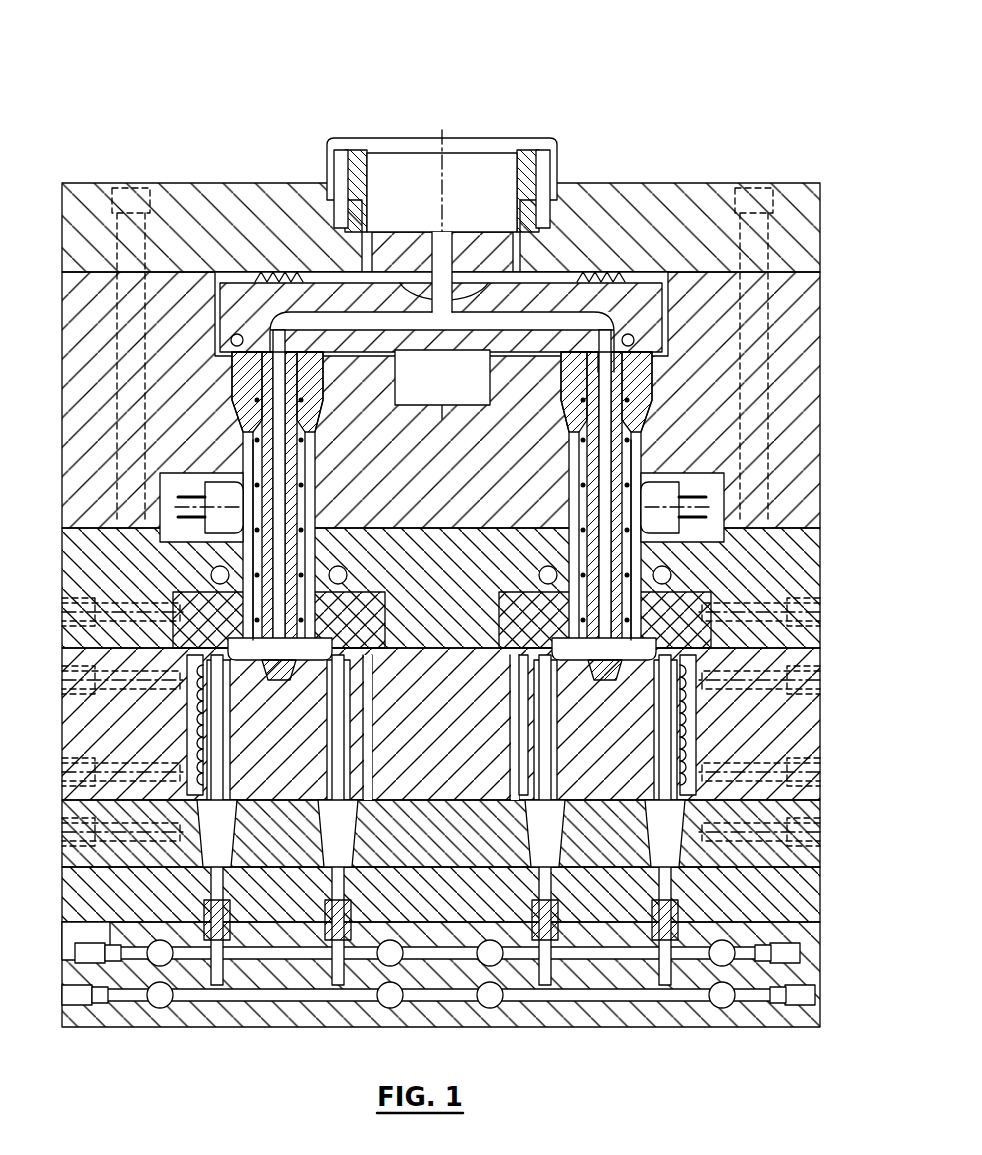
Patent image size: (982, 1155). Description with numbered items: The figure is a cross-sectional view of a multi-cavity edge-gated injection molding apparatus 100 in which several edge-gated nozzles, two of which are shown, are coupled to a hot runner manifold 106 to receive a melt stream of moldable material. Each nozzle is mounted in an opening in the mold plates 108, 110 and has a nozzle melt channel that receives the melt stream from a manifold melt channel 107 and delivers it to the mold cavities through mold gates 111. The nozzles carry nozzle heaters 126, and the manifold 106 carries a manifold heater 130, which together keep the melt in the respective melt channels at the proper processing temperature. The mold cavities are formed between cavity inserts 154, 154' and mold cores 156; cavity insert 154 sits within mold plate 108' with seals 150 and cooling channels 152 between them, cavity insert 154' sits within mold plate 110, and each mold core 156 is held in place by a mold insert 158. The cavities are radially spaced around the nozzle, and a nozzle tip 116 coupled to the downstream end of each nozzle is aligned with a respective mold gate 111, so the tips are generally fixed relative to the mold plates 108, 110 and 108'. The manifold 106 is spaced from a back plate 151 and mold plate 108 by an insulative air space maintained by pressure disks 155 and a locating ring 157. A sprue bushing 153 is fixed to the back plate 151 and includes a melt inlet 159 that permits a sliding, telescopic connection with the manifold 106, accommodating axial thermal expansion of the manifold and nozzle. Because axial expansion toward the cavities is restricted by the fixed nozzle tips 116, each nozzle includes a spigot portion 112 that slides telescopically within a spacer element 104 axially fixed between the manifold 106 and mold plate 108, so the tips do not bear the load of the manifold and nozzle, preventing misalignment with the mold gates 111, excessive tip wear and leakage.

The edge-gated injection molding apparatus 100 is at (718, 135).
The spacer element 104 is at (660, 380).
The hot runner manifold 106 is at (668, 310).
The manifold melt channel 107 is at (605, 330).
The mold plate 108 is at (450, 453).
The mold plate 108' is at (441, 727).
The mold plate 110 is at (456, 584).
The mold gate 111 is at (700, 657).
The spigot portion 112 is at (612, 360).
The nozzle tip 116 is at (682, 620).
The nozzle heater 126 is at (620, 410).
The manifold heater 130 is at (633, 340).
The seal 150 is at (690, 793).
The back plate 151 is at (785, 205).
The cooling channel 152 is at (690, 760).
The sprue bushing 153 is at (565, 160).
The cavity insert 154 is at (535, 725).
The cavity insert 154' is at (496, 665).
The pressure disk 155 is at (258, 270).
The mold core 156 is at (690, 898).
The locating ring 157 is at (392, 400).
The mold insert 158 is at (690, 950).
The melt inlet 159 is at (400, 185).